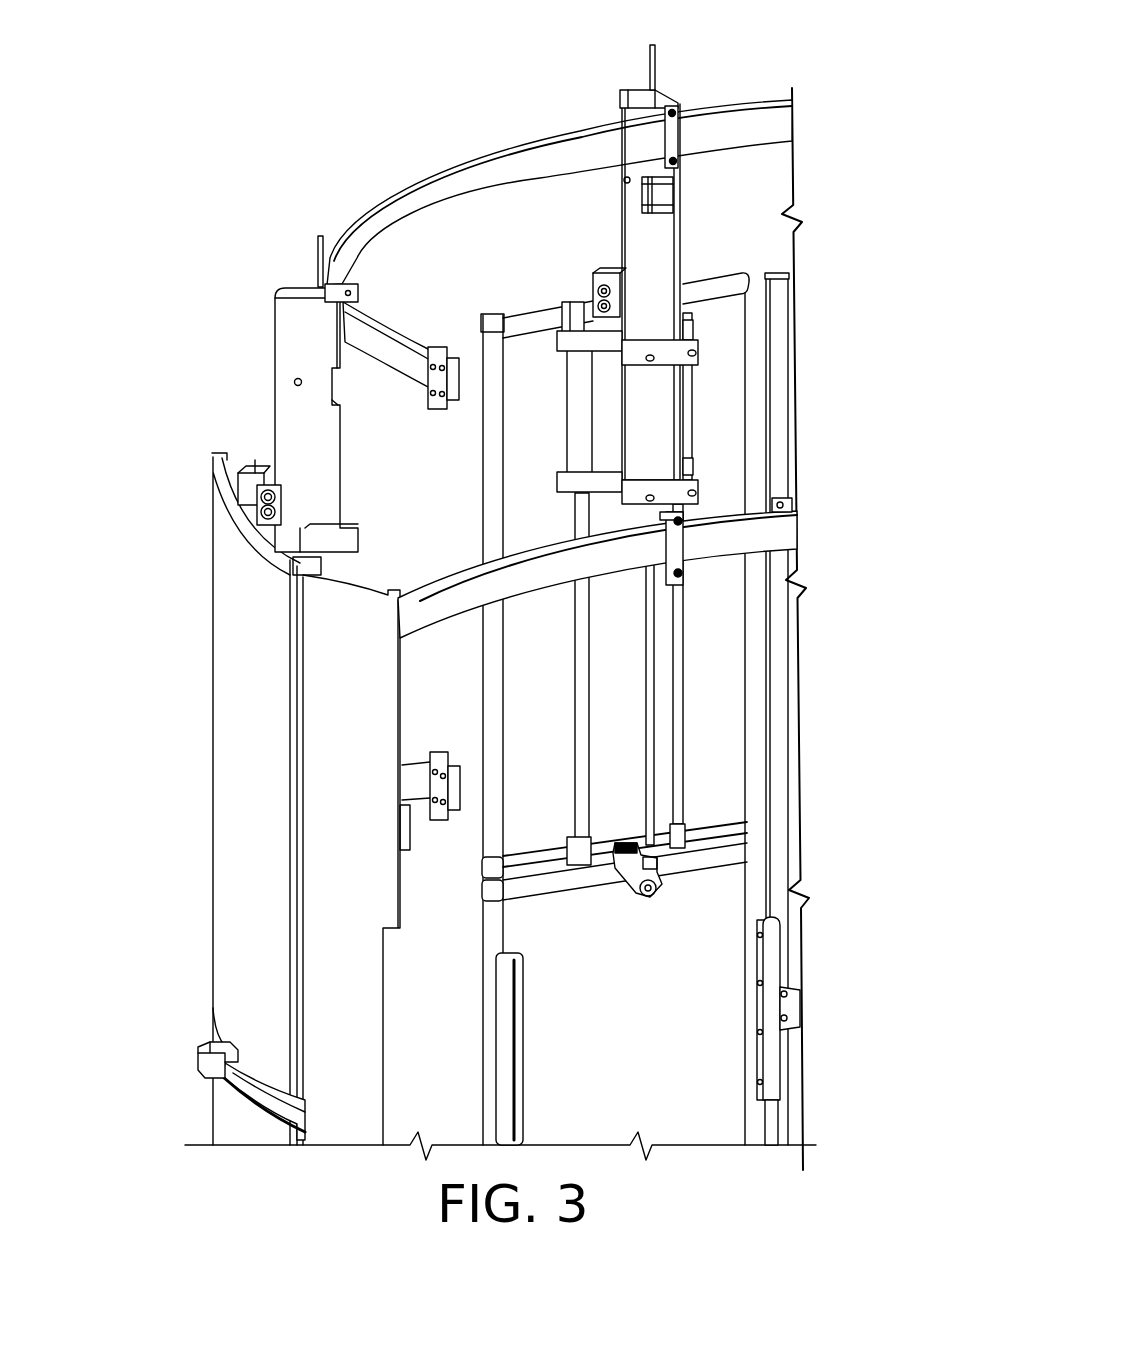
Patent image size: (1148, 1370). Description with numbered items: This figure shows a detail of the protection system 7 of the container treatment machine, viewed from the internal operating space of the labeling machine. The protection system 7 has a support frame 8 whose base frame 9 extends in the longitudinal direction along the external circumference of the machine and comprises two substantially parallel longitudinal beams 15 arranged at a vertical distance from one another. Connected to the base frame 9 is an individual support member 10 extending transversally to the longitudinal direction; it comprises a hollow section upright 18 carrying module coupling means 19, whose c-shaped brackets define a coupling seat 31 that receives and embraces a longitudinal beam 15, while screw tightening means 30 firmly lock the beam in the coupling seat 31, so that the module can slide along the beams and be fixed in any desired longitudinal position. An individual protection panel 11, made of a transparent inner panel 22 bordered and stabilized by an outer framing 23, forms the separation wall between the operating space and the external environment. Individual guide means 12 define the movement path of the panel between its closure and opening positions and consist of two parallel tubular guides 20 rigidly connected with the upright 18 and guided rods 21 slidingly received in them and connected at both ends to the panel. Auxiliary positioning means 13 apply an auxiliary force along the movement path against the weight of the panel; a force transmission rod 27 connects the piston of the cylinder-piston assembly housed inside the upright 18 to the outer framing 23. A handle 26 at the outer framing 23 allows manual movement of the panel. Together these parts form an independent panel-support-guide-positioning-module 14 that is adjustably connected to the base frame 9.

The protection system 7 is at (302, 203).
The support frame 8 is at (718, 496).
The base frame 9 is at (758, 118).
The individual support member 10 is at (670, 240).
The individual protection panel 11 is at (516, 346).
The individual guide means 12 is at (548, 462).
The auxiliary positioning means 13 is at (625, 634).
The individual panel-support-guide-positioning-module 14 is at (567, 262).
The longitudinal beam 15 is at (414, 186).
The hollow section upright 18 is at (280, 412).
The module coupling means 19 is at (370, 286).
The tubular guide 20 is at (578, 415).
The guided rod 21 is at (560, 737).
The transparent inner panel 22 is at (520, 820).
The outer framing 23 is at (492, 856).
The handle 26 is at (198, 1050).
The force transmission rod 27 is at (650, 780).
The screw tightening means 30 is at (443, 348).
The coupling seat 31 is at (340, 333).